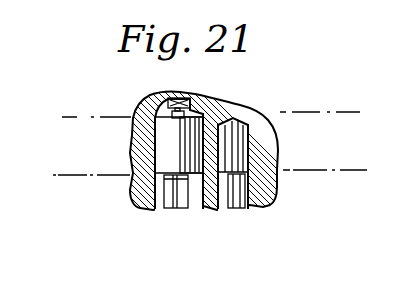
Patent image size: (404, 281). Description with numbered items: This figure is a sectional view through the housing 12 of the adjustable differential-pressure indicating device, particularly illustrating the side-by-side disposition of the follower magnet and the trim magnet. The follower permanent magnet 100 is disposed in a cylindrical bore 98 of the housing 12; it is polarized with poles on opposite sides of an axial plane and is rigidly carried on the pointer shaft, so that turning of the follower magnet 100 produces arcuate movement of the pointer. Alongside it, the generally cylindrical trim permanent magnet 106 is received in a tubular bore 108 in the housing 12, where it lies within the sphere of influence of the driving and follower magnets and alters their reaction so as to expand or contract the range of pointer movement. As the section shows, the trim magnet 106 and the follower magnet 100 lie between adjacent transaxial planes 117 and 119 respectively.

The housing 12 is at (253, 192).
The cylindrical bore 98 is at (158, 192).
The follower permanent magnet 100 is at (180, 141).
The trim permanent magnet 106 is at (240, 150).
The tubular bore 108 is at (252, 184).
The transaxial plane 117 is at (195, 120).
The transaxial plane 119 is at (194, 180).